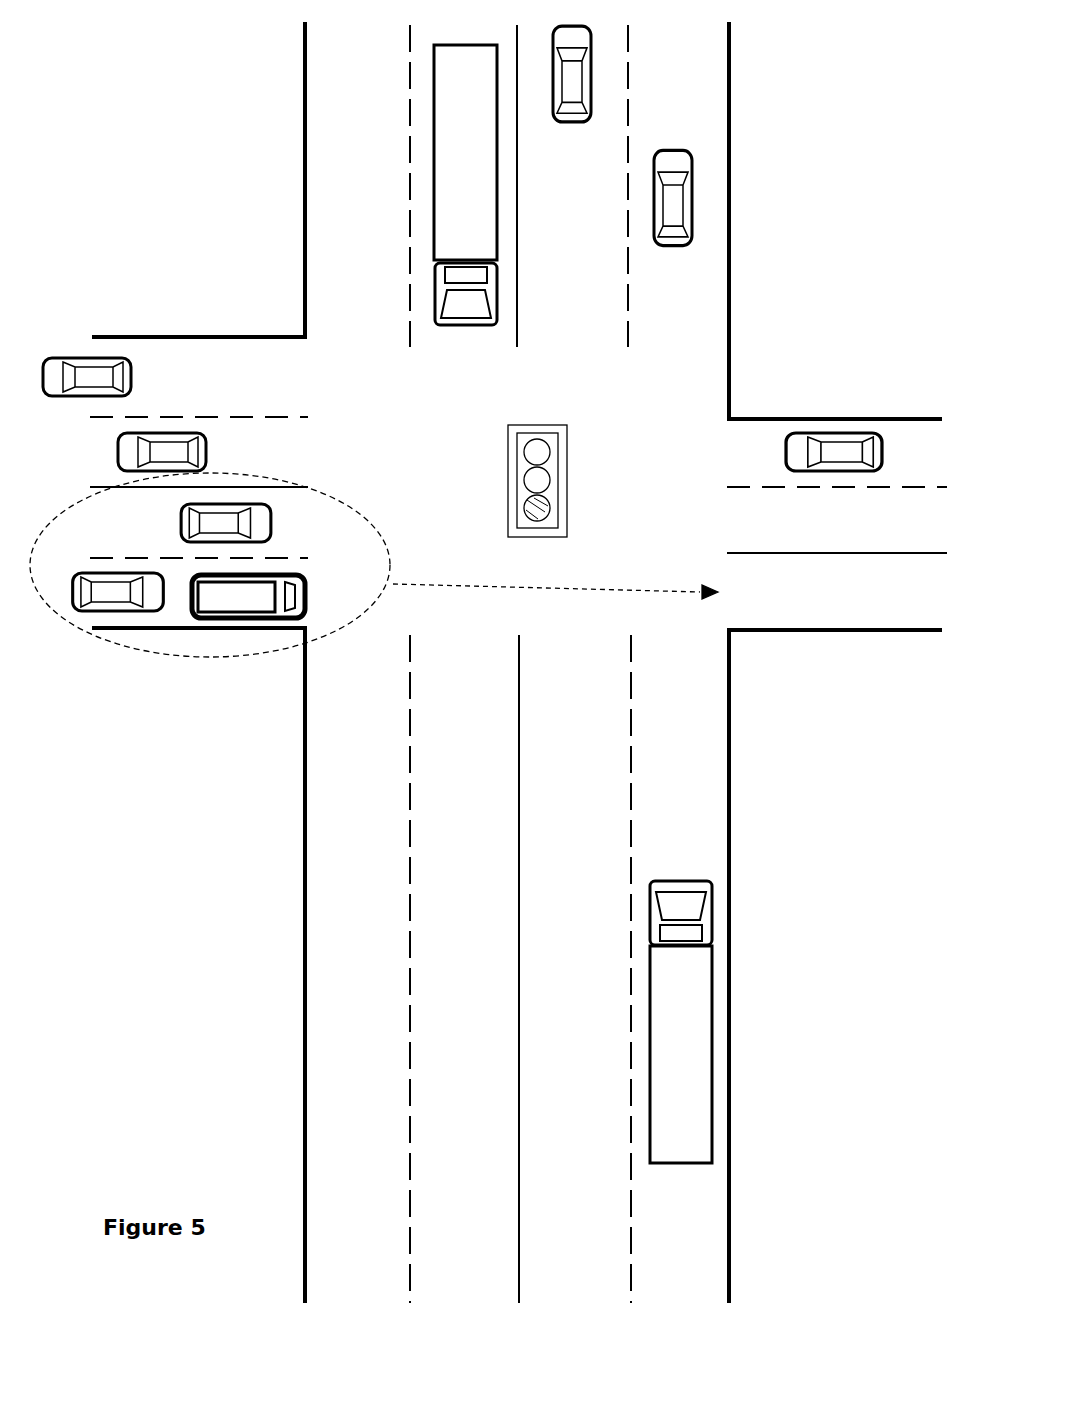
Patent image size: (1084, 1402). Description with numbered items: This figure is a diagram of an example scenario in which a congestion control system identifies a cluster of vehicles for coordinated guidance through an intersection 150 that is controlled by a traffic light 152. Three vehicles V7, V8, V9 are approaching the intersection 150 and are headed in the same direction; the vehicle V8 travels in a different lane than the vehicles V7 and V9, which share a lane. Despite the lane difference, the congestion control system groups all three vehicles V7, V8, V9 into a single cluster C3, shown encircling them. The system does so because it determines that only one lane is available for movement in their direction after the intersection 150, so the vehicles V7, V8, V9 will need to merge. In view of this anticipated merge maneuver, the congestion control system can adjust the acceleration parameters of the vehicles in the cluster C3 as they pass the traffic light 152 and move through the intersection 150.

The intersection 150 is at (787, 348).
The traffic light 152 is at (523, 425).
The vehicle V7 is at (272, 618).
The vehicle V8 is at (270, 512).
The vehicle V9 is at (82, 612).
The cluster C3 is at (193, 658).